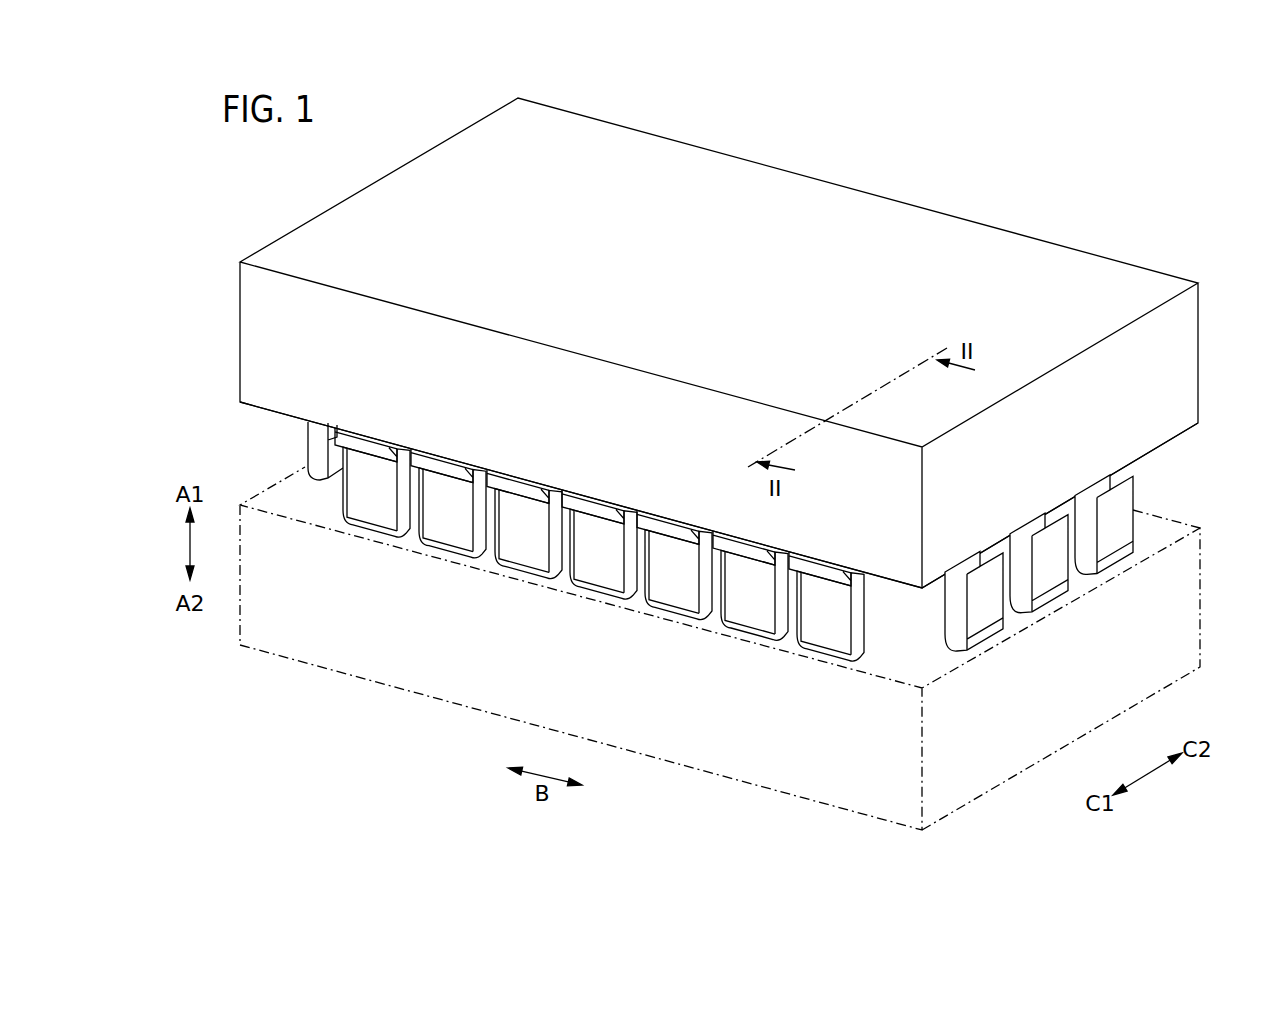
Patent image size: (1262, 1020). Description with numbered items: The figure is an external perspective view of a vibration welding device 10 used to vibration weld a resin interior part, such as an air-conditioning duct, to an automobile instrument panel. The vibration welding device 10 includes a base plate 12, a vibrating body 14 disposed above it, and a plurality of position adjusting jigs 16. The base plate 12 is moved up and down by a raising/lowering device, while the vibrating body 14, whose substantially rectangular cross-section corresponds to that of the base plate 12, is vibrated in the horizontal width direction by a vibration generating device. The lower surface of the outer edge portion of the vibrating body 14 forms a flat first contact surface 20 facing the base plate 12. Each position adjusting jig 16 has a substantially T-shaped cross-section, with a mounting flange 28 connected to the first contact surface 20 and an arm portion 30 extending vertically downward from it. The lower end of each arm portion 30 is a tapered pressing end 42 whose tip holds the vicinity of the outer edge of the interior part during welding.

The vibration welding device 10 is at (719, 409).
The base plate 12 is at (326, 688).
The vibrating body 14 is at (836, 183).
The position adjusting jig 16 is at (720, 564).
The first contact surface 20 is at (275, 400).
The mounting flange 28 is at (435, 462).
The arm portion 30 is at (460, 537).
The pressing end 42 is at (450, 548).